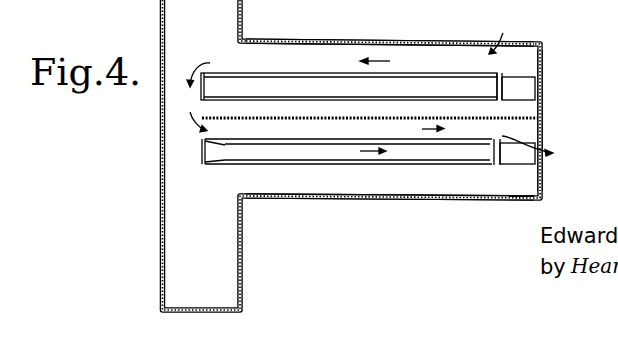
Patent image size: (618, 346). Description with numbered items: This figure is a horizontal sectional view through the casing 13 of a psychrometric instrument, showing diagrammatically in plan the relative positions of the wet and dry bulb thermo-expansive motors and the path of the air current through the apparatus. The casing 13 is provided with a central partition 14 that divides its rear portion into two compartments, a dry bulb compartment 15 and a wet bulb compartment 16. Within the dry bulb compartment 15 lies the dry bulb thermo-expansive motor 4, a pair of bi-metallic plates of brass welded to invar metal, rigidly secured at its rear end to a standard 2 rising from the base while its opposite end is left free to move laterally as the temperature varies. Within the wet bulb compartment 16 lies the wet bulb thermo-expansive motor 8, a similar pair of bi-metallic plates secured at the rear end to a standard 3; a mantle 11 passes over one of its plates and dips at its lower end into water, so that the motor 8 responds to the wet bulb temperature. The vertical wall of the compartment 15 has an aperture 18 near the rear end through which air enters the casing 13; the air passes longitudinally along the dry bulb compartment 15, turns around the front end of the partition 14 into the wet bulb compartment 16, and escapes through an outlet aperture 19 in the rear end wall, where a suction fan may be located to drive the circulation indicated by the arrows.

The standard 2 is at (500, 85).
The standard 3 is at (499, 144).
The dry bulb thermo-expansive motor 4 is at (355, 75).
The wet bulb thermo-expansive motor 8 is at (221, 142).
The mantle 11 is at (327, 142).
The casing 13 is at (445, 42).
The central partition 14 is at (516, 117).
The dry bulb compartment 15 is at (533, 52).
The wet bulb compartment 16 is at (527, 183).
The aperture 18 is at (508, 44).
The outlet aperture 19 is at (545, 163).